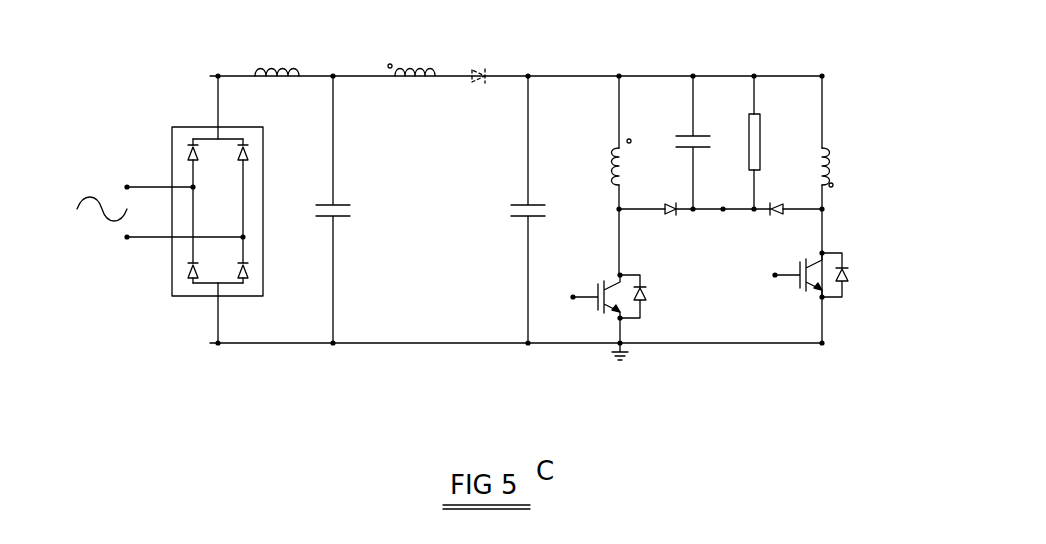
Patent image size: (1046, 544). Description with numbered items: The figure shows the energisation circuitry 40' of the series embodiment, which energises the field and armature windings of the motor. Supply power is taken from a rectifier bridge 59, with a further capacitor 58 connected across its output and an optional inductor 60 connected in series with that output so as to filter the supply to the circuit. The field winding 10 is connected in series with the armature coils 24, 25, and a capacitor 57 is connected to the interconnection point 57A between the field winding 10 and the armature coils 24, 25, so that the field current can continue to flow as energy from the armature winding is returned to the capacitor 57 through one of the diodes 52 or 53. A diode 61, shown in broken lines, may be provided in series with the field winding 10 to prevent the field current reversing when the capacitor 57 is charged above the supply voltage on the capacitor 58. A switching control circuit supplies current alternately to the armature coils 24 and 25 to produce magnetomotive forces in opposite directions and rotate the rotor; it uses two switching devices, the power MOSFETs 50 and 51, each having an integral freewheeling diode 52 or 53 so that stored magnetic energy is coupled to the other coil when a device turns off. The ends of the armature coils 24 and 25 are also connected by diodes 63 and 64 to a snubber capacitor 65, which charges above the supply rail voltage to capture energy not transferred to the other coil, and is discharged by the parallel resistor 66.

The rectifier bridge 59 is at (172, 164).
The inductor 60 is at (266, 71).
The field winding 10 is at (409, 71).
The diode 61 is at (480, 71).
The interconnection point 57A is at (530, 75).
The energisation circuitry 40' is at (801, 37).
The further capacitor 58 is at (338, 218).
The capacitor 57 is at (522, 218).
The armature coil 24 is at (618, 170).
The snubber capacitor 65 is at (680, 136).
The parallel resistor 66 is at (762, 142).
The armature coil 25 is at (824, 153).
The diode 63 is at (672, 214).
The diode 64 is at (777, 214).
The power MOSFET 50 is at (597, 293).
The freewheeling diode 52 is at (645, 294).
The power MOSFET 51 is at (800, 284).
The freewheeling diode 53 is at (850, 274).